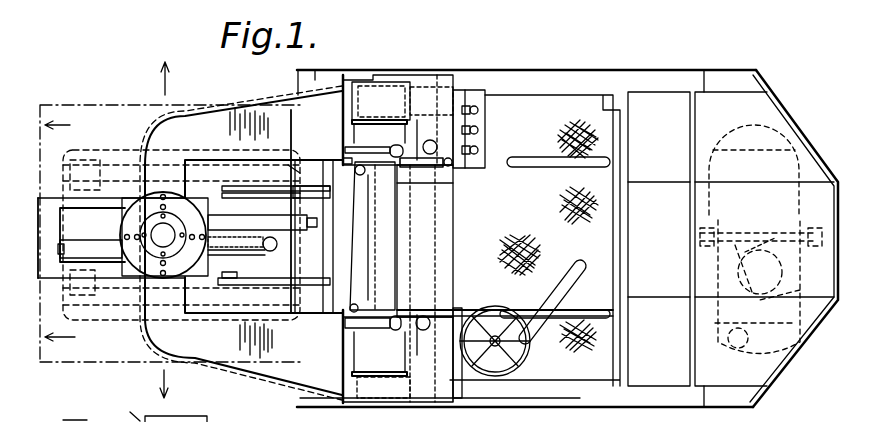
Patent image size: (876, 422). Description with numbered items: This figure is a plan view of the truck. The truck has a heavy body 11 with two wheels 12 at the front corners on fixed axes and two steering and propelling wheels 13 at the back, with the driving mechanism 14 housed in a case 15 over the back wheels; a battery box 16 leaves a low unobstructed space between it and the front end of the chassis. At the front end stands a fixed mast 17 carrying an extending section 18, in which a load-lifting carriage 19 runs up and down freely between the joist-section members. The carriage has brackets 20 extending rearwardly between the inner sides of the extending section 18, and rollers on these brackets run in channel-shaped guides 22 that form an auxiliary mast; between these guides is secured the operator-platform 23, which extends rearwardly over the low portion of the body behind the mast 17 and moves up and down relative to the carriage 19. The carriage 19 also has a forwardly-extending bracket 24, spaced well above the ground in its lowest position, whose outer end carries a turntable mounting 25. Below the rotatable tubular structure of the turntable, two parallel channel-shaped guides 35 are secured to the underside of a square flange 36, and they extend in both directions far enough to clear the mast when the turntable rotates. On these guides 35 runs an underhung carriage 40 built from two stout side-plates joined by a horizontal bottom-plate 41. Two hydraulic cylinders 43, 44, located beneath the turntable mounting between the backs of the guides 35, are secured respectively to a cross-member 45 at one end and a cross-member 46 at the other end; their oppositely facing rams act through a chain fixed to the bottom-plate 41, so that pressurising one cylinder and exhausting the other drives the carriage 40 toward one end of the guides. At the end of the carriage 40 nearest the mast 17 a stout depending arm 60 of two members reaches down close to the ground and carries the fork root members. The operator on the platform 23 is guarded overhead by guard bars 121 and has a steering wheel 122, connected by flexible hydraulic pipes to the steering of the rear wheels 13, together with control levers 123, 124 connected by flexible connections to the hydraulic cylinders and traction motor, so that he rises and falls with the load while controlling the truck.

The body 11 is at (575, 396).
The wheels 12 is at (325, 75).
The steering and propelling wheels 13 is at (763, 157).
The driving mechanism 14 is at (766, 244).
The case 15 is at (705, 276).
The battery box 16 is at (648, 103).
The mast 17 is at (356, 82).
The extending section 18 is at (407, 117).
The load-lifting carriage 19 is at (345, 80).
The brackets 20 is at (372, 140).
The channel-shaped guides 22 is at (135, 242).
The operator-platform 23 is at (517, 143).
The forwardly-extending bracket 24 is at (272, 110).
The turntable mounting 25 is at (150, 262).
The channel-shaped guides 35 is at (53, 197).
The square flange 36 is at (125, 200).
The underhung carriage 40 is at (250, 183).
The bottom-plate 41 is at (297, 252).
The hydraulic cylinder 43 is at (100, 245).
The hydraulic cylinder 44 is at (207, 167).
The cross-member 45 is at (170, 233).
The cross-member 46 is at (322, 230).
The depending arm 60 is at (287, 163).
The guard bars 121 is at (540, 158).
The steering wheel 122 is at (482, 338).
The control lever 123 is at (480, 147).
The control lever 124 is at (475, 130).